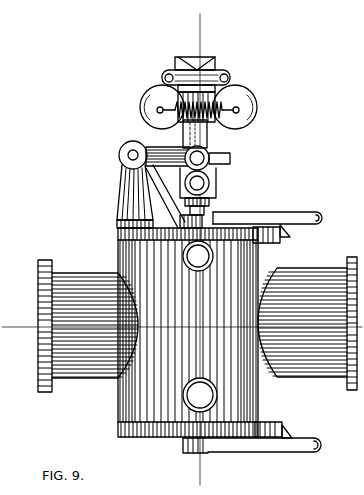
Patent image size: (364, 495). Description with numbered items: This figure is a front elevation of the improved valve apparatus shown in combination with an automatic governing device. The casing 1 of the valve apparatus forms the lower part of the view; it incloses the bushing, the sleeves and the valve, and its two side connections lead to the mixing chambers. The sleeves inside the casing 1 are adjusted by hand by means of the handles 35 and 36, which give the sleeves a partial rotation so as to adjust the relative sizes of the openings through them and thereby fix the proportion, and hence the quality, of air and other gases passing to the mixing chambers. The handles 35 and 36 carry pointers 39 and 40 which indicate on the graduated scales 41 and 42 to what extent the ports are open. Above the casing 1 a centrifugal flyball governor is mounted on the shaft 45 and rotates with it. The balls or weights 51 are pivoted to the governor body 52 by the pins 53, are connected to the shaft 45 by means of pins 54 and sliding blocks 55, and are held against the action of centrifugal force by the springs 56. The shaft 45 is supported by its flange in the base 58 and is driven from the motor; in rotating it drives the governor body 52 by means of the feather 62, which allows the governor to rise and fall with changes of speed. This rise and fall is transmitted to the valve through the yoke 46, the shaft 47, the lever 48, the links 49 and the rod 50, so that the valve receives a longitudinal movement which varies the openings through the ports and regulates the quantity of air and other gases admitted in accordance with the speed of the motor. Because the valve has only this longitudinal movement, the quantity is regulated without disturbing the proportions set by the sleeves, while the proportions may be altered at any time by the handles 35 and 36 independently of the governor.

The casing 1 is at (118, 400).
The handle 35 is at (312, 452).
The handle 36 is at (322, 214).
The pointer 39 is at (292, 433).
The pointer 40 is at (289, 232).
The graduated scale 41 is at (282, 424).
The graduated scale 42 is at (280, 239).
The shaft 45 is at (208, 146).
The yoke 46 is at (230, 159).
The shaft 47 is at (124, 158).
The lever 48 is at (186, 148).
The links 49 is at (214, 179).
The rod 50 is at (228, 214).
The balls or weights 51 is at (153, 100).
The governor body 52 is at (184, 130).
The pins 53 is at (168, 74).
The pins 54 is at (200, 68).
The sliding blocks 55 is at (196, 70).
The springs 56 is at (213, 100).
The base 58 is at (217, 200).
The feather 62 is at (215, 136).